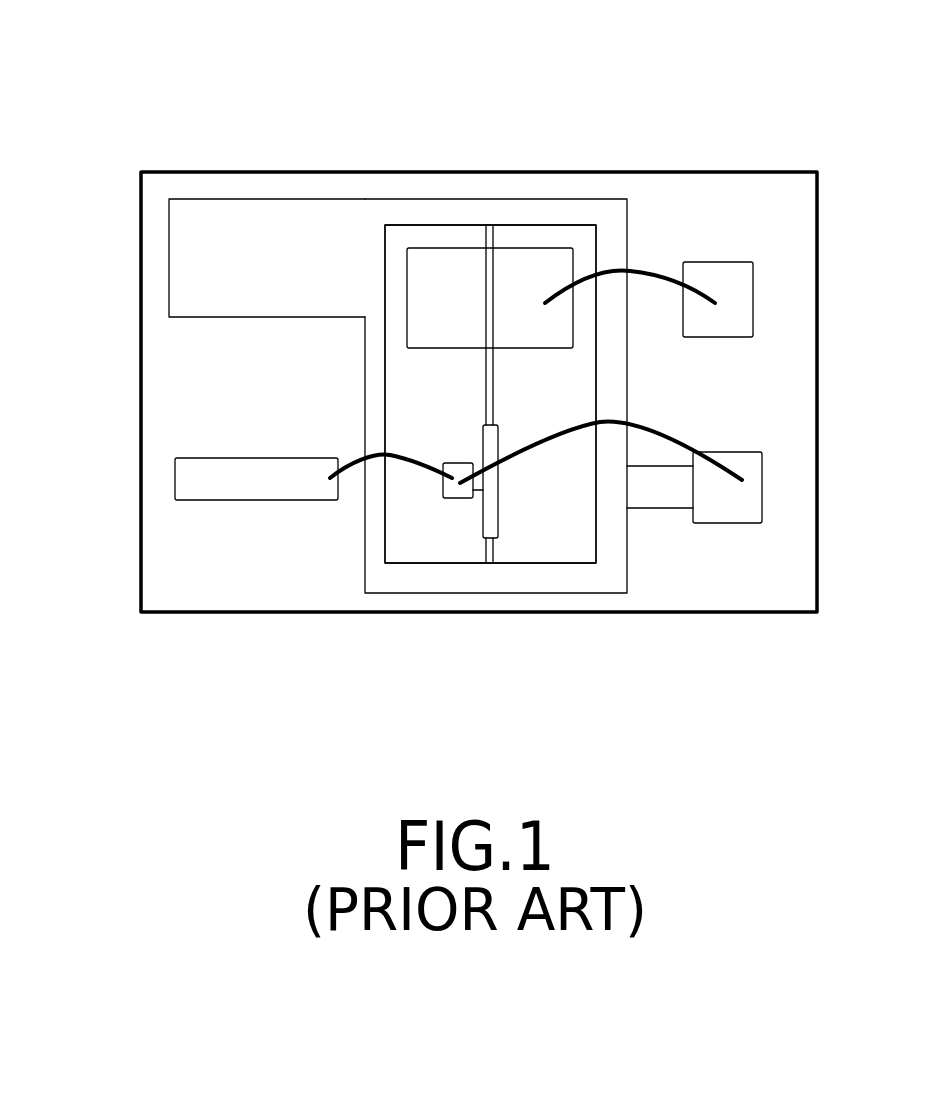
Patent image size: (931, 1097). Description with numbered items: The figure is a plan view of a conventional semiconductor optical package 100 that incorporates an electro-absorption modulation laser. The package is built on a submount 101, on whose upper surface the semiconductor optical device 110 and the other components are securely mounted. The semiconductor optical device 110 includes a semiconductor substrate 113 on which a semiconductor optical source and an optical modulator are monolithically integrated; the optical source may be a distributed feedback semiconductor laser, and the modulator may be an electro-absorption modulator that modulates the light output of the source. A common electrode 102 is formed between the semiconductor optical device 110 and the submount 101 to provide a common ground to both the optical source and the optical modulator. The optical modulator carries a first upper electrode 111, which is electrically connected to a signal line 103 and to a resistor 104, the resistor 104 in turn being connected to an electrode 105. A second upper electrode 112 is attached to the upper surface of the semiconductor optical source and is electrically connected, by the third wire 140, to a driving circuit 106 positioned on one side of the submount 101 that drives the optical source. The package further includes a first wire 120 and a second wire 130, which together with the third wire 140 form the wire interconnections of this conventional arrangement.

The semiconductor optical package 100 is at (768, 78).
The submount 101 is at (145, 240).
The common electrode 102 is at (227, 220).
The signal line 103 is at (188, 492).
The resistor 104 is at (663, 502).
The electrode 105 is at (742, 513).
The driving circuit 106 is at (735, 282).
The semiconductor optical device 110 is at (407, 226).
The first upper electrode 111 is at (460, 493).
The second upper electrode 112 is at (528, 262).
The semiconductor substrate 113 is at (415, 548).
The first wire 120 is at (347, 472).
The second wire 130 is at (678, 438).
The third wire 140 is at (653, 272).